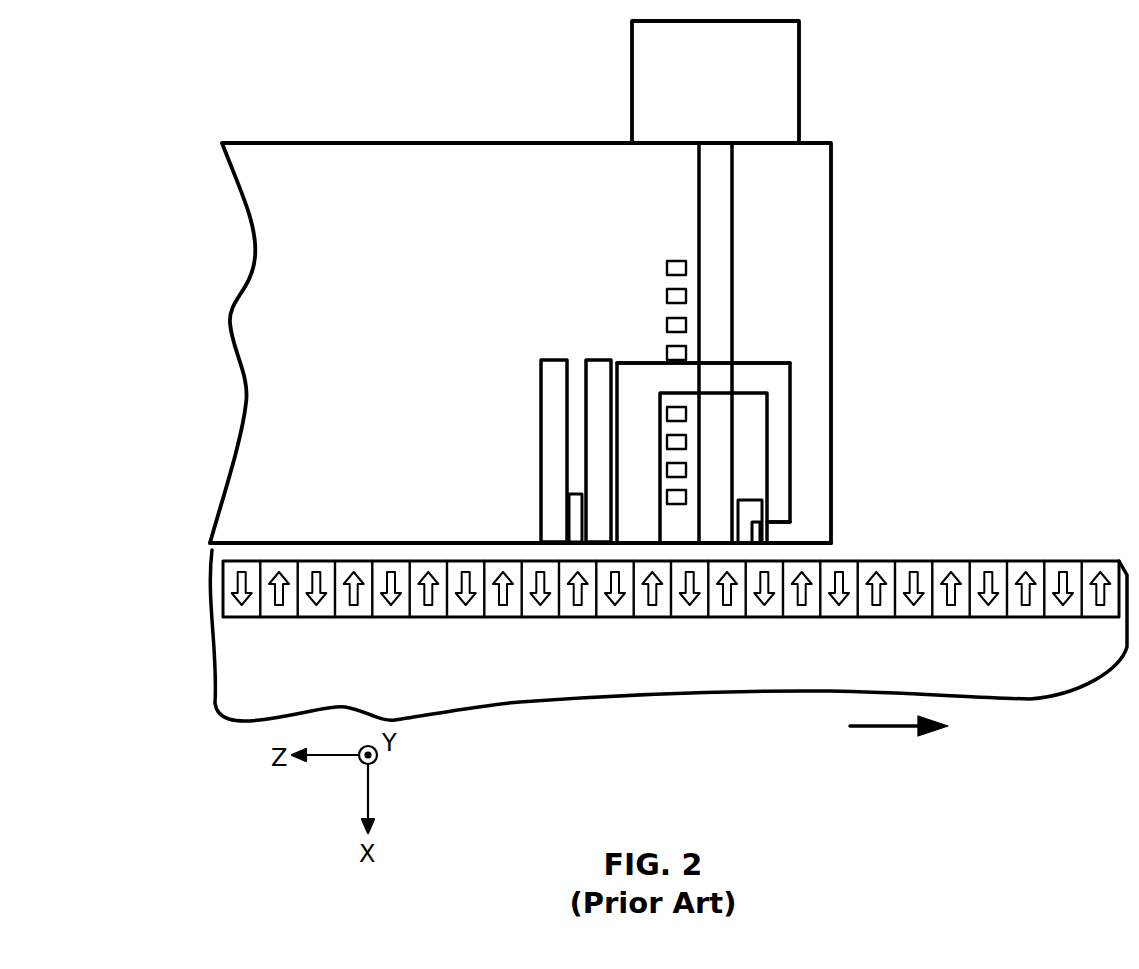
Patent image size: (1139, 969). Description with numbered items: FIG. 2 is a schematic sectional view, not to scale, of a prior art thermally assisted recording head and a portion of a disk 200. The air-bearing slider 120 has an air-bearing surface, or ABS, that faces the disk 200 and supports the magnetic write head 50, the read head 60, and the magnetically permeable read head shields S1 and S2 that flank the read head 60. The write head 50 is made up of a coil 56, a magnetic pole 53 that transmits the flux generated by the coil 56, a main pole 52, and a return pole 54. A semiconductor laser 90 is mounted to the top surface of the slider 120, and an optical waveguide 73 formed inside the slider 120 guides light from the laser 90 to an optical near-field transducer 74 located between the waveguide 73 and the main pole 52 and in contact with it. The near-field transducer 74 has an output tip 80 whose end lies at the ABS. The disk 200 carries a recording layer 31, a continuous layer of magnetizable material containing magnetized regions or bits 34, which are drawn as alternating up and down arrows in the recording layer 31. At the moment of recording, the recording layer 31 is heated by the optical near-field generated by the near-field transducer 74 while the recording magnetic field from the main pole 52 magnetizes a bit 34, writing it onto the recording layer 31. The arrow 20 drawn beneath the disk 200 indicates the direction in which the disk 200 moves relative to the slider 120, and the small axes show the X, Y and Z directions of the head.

The air-bearing slider 120 is at (260, 428).
The semiconductor laser 90 is at (785, 80).
The optical waveguide 73 is at (712, 300).
The magnetic pole 53 is at (778, 410).
The return pole 54 is at (640, 374).
The coil 56 is at (661, 265).
The magnetic write head 50 is at (630, 295).
The read head shield S1 is at (553, 451).
The read head shield S2 is at (601, 357).
The read head 60 is at (568, 527).
The optical near-field transducer 74 is at (745, 500).
The main pole 52 is at (765, 531).
The air-bearing surface ABS is at (828, 553).
The output tip 80 is at (745, 533).
The disk 200 is at (997, 688).
The recording layer 31 is at (638, 572).
The magnetized regions or bits 34 is at (1090, 572).
The direction of media motion 20 is at (887, 730).